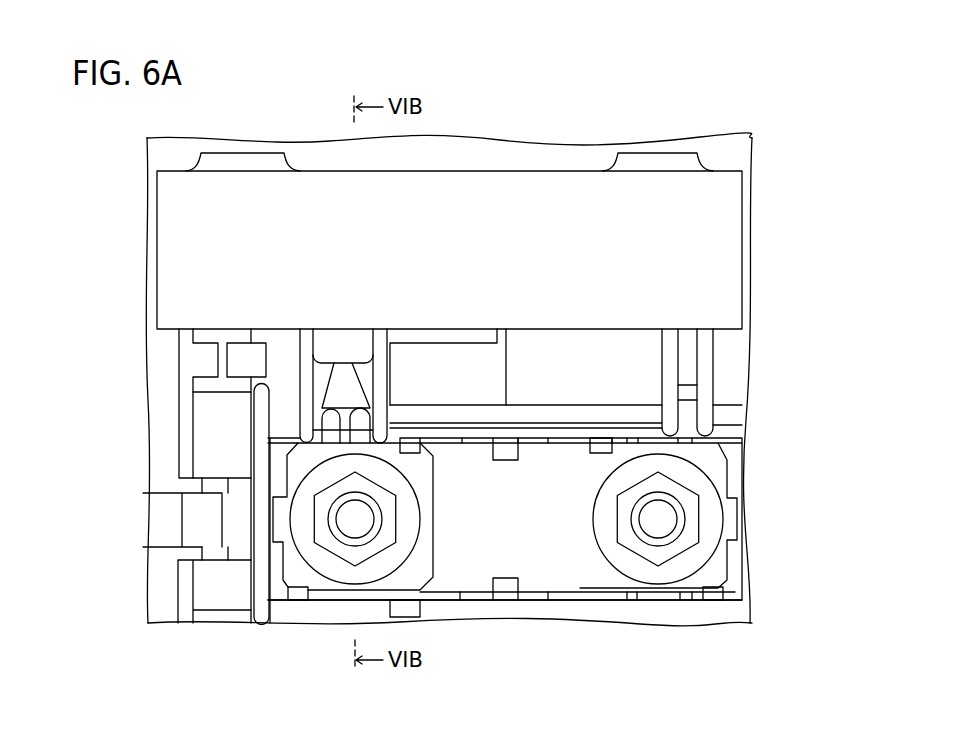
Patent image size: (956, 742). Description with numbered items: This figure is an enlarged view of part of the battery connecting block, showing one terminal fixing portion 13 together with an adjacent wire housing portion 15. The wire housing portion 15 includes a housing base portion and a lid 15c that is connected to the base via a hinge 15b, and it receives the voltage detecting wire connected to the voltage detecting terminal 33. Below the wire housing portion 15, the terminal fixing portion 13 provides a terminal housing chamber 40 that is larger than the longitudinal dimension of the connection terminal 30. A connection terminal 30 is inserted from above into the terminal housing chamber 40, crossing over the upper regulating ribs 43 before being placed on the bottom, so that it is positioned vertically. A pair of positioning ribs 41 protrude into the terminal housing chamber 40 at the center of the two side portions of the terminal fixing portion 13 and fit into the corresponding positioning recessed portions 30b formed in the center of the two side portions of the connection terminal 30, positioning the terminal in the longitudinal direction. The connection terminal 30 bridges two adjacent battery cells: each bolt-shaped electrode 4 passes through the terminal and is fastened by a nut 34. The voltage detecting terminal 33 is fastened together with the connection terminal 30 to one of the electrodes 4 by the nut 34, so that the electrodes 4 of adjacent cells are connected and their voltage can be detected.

The electrode 4 is at (355, 520).
The terminal fixing portion 13 is at (560, 600).
The wire housing portion 15 is at (473, 167).
The hinge 15b is at (657, 162).
The lid 15c is at (582, 243).
The connection terminal 30 is at (470, 553).
The positioning recessed portion 30b is at (506, 456).
The voltage detecting terminal 33 is at (298, 462).
The nut 34 is at (322, 518).
The terminal housing chamber 40 is at (570, 598).
The positioning rib 41 is at (506, 456).
The upper regulating rib 43 is at (412, 446).